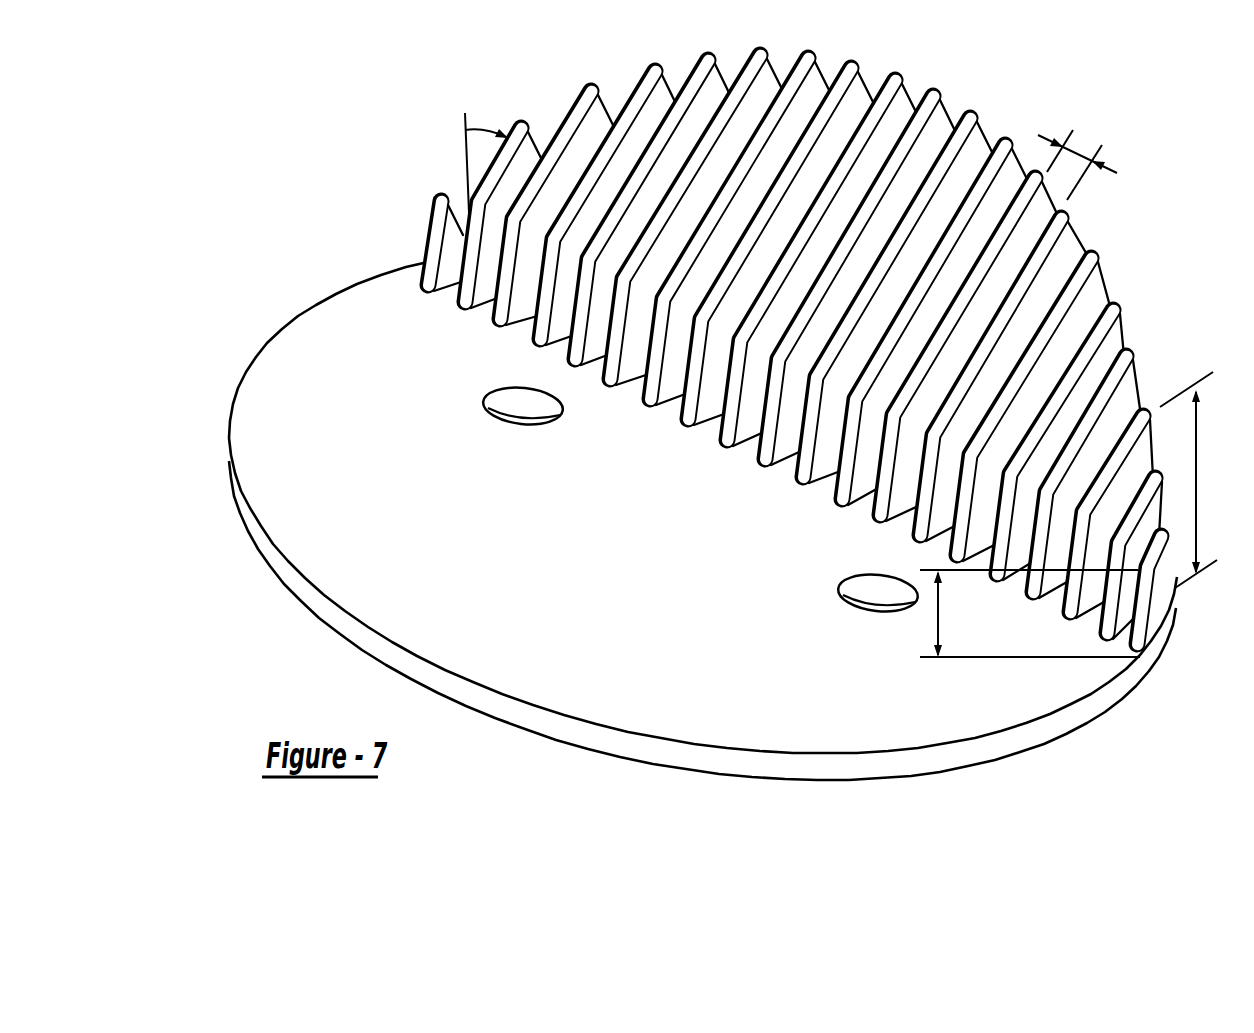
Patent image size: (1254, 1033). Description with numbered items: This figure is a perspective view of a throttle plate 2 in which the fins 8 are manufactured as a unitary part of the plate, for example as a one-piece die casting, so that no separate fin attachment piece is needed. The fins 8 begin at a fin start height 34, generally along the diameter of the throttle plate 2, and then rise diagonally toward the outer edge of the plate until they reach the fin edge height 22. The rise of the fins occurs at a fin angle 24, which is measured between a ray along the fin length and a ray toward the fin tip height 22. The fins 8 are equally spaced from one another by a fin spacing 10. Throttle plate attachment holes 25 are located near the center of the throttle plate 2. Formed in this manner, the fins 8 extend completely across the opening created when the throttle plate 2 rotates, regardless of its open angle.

The throttle plate 2 is at (1048, 713).
The fins 8 is at (1108, 289).
The fin spacing 10 is at (1080, 138).
The fin edge height 22 is at (1197, 505).
The fin angle 24 is at (488, 128).
The throttle plate attachment holes 25 is at (838, 590).
The fin start height 34 is at (1030, 613).